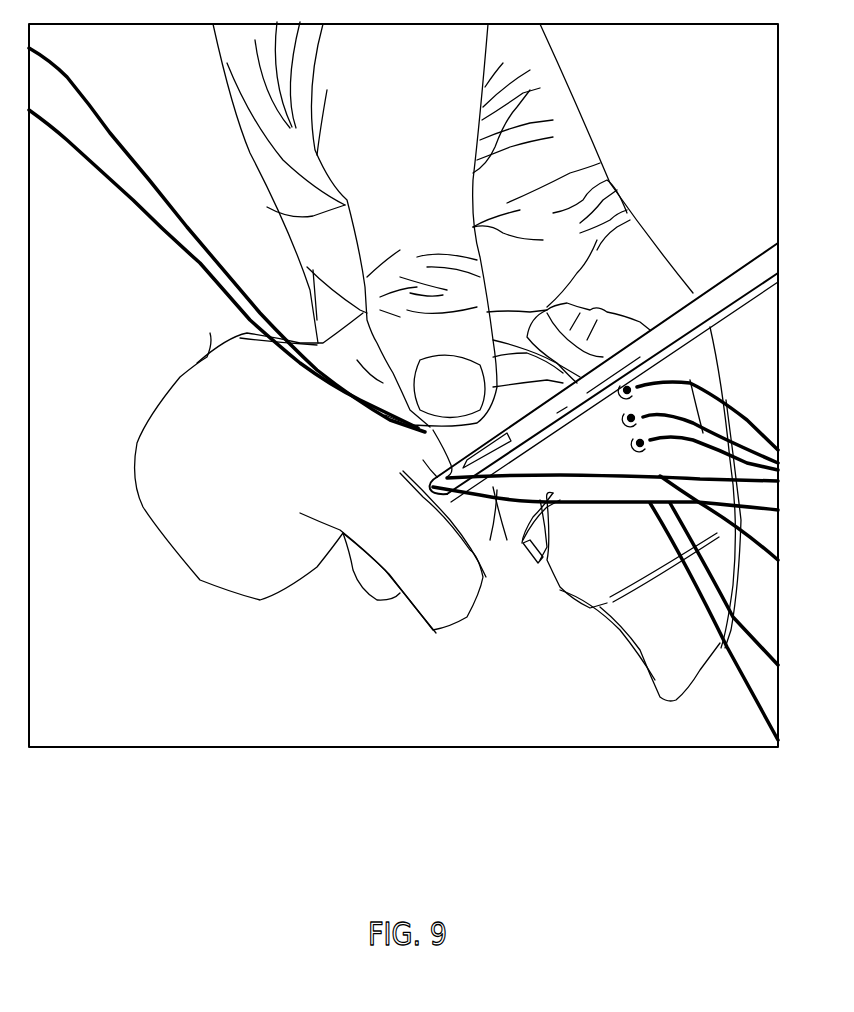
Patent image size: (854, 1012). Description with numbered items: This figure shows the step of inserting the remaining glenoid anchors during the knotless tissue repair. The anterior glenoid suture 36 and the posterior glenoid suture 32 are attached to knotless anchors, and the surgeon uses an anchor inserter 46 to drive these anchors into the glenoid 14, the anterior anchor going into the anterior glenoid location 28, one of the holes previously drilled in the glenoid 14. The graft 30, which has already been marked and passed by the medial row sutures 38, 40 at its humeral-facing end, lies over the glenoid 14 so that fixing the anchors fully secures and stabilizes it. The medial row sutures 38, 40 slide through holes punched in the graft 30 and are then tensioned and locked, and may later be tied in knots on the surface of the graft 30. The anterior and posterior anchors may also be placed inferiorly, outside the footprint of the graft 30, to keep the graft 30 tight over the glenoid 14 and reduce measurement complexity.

The glenoid 14 is at (423, 460).
The anterior glenoid location 28 is at (433, 510).
The graft 30 is at (550, 555).
The posterior glenoid suture 32 is at (185, 223).
The anterior glenoid suture 36 is at (753, 503).
The medial row suture 38 is at (770, 463).
The medial row suture 40 is at (737, 430).
The anchor inserter 46 is at (630, 350).